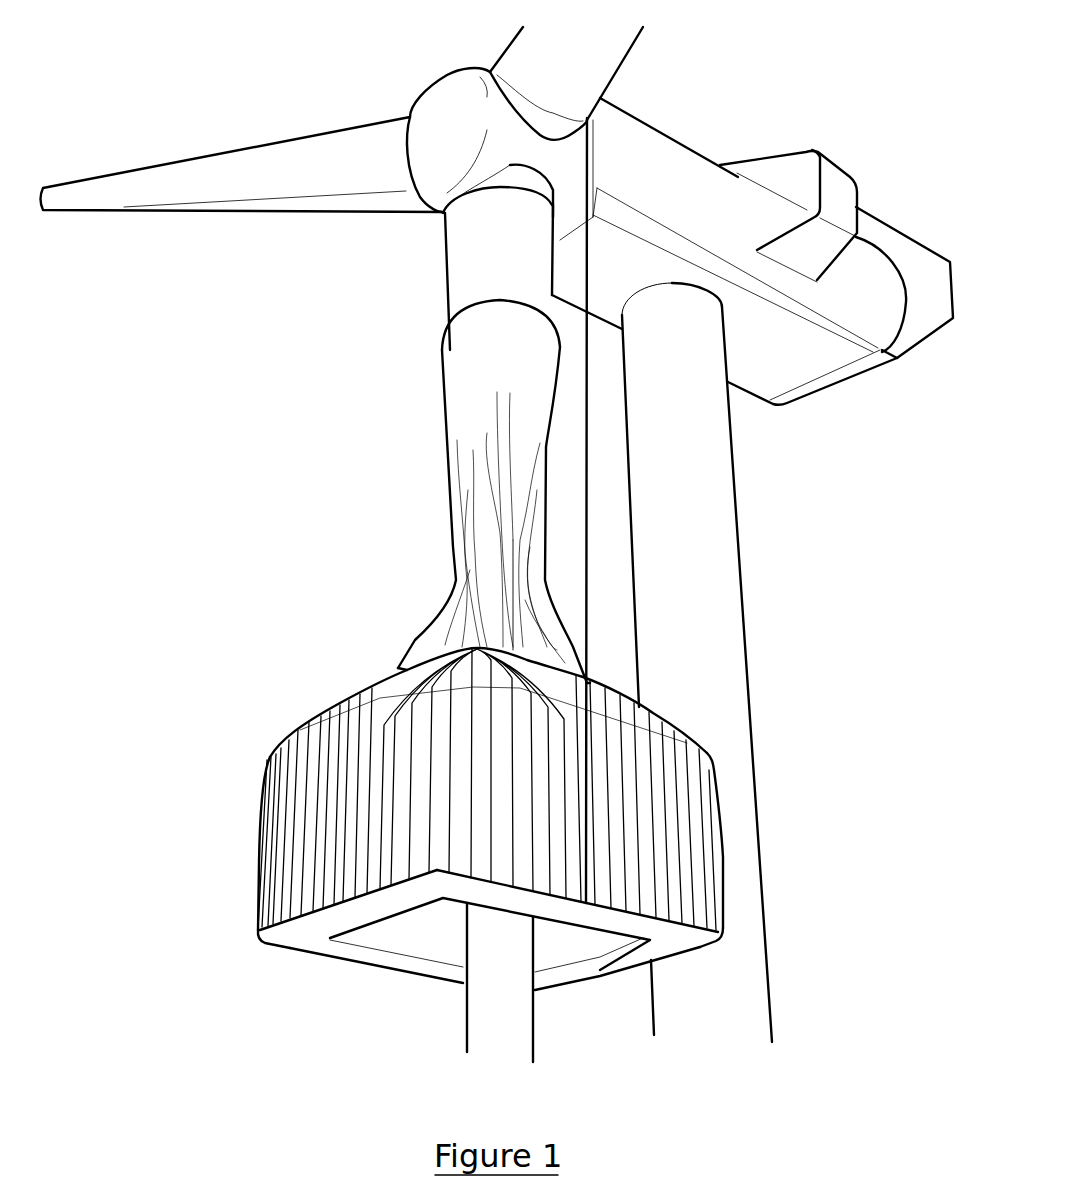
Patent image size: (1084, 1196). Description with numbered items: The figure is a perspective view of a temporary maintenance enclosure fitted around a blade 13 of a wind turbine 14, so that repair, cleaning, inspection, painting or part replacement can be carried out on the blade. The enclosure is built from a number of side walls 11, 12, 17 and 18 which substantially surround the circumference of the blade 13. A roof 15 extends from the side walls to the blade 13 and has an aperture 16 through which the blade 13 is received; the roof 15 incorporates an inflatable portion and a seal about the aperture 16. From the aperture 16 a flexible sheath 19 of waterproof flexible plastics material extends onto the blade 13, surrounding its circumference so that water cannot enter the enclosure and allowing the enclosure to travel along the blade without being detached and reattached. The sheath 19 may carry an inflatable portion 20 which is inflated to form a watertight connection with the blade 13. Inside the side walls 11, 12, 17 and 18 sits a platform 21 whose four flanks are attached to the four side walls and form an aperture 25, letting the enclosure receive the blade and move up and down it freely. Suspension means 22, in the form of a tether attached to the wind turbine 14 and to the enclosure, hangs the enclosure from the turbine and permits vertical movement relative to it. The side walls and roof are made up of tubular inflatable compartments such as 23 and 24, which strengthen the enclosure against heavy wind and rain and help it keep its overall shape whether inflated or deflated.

The side wall 11 is at (287, 798).
The side wall 12 is at (695, 813).
The blade 13 is at (462, 246).
The wind turbine 14 is at (693, 157).
The roof 15 is at (660, 718).
The aperture 16 is at (412, 664).
The side wall 17 is at (260, 916).
The side wall 18 is at (650, 968).
The flexible sheath 19 is at (465, 402).
The inflatable portion 20 is at (440, 345).
The platform 21 is at (392, 960).
The suspension means 22 is at (588, 483).
The inflatable compartment 23 is at (710, 868).
The inflatable compartment 24 is at (720, 913).
The aperture 25 is at (588, 948).